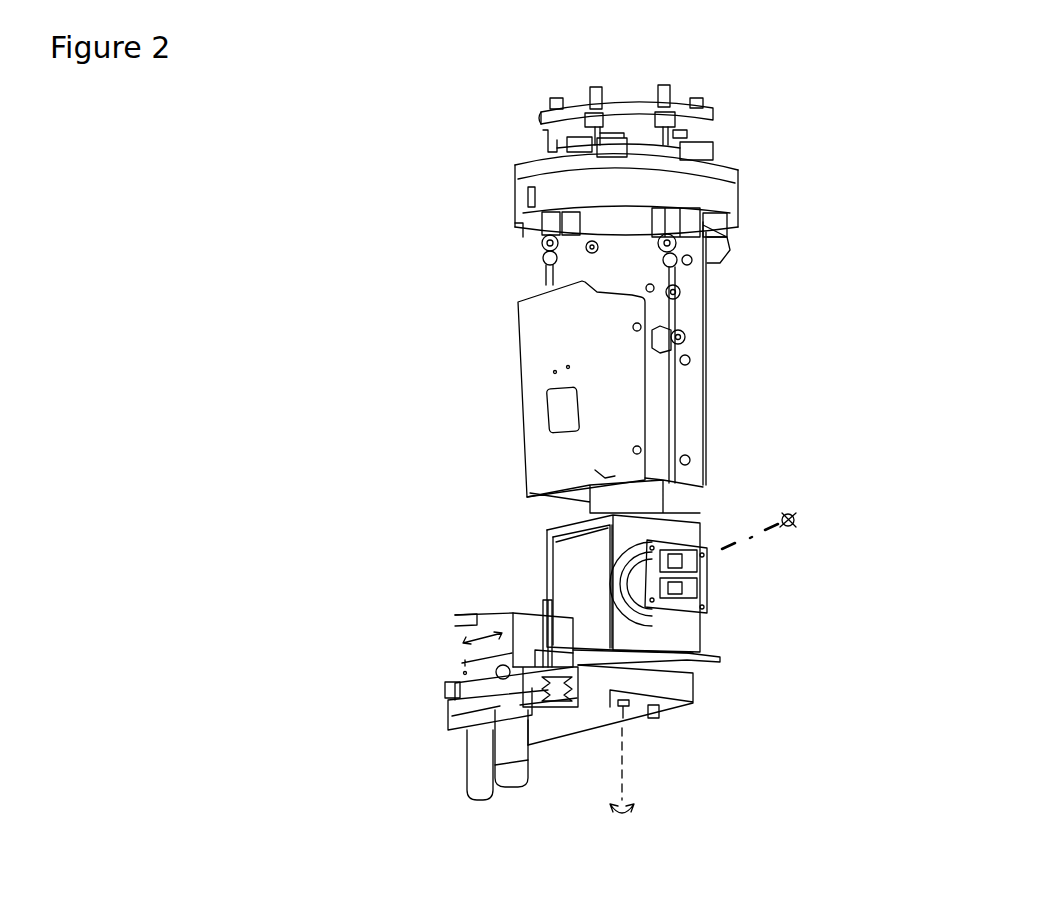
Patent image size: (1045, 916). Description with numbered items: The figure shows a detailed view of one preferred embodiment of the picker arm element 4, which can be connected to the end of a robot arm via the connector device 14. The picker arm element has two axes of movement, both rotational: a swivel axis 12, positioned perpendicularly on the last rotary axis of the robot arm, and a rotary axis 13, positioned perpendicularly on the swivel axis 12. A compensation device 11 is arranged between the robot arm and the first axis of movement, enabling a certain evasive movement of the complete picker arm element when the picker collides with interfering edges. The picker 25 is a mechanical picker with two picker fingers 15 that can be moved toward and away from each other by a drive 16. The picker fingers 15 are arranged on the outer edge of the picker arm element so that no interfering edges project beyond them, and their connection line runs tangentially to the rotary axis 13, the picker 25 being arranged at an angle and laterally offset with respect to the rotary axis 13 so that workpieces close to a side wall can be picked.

The picker arm element 4 is at (864, 72).
The connector device 14 is at (636, 90).
The compensation device 11 is at (497, 212).
The picker 25 is at (672, 660).
The swivel axis 12 is at (750, 557).
The rotary axis 13 is at (660, 771).
The drive 16 is at (449, 647).
The picker fingers 15 is at (505, 805).